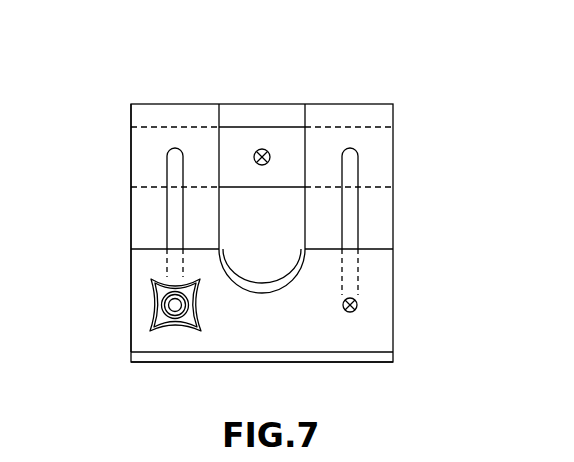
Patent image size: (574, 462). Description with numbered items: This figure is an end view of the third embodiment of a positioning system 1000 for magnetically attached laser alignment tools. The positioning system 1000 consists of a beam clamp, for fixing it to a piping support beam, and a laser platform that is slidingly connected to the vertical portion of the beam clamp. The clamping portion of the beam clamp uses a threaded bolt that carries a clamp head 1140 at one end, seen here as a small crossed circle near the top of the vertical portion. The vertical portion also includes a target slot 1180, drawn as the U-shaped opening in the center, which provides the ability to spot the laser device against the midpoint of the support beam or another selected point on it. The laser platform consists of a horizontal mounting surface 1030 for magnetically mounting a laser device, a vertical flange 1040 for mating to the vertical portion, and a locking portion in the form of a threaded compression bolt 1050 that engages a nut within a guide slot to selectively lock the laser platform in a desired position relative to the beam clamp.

The positioning system 1000 is at (163, 64).
The horizontal mounting surface 1030 is at (135, 357).
The vertical flange 1040 is at (137, 262).
The threaded compression bolt 1050 is at (183, 305).
The clamp head 1140 is at (262, 149).
The target slot 1180 is at (290, 240).